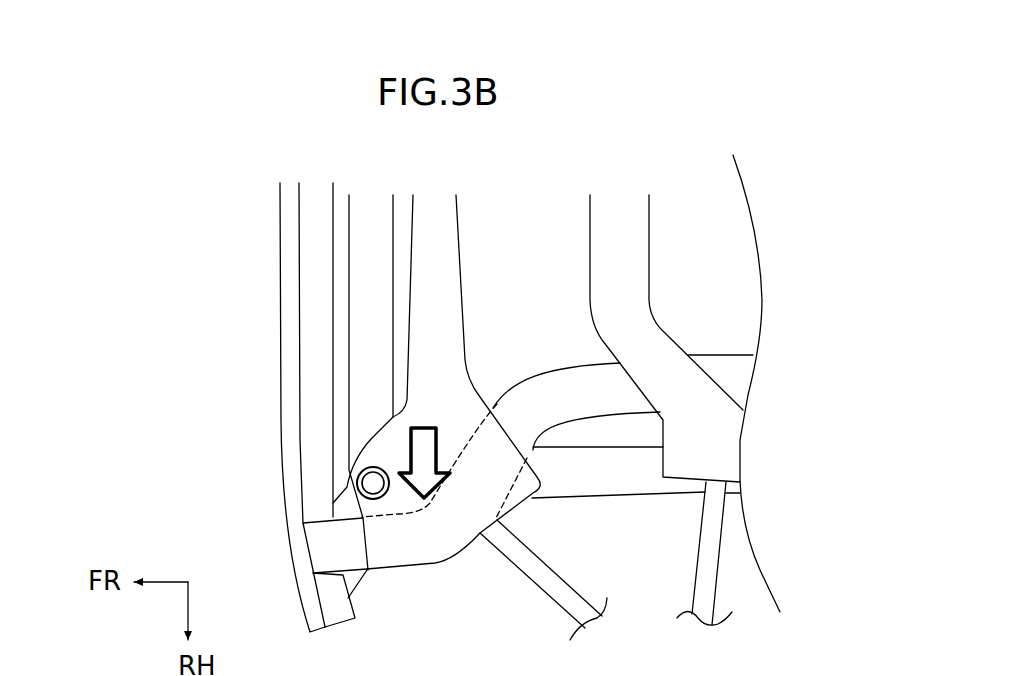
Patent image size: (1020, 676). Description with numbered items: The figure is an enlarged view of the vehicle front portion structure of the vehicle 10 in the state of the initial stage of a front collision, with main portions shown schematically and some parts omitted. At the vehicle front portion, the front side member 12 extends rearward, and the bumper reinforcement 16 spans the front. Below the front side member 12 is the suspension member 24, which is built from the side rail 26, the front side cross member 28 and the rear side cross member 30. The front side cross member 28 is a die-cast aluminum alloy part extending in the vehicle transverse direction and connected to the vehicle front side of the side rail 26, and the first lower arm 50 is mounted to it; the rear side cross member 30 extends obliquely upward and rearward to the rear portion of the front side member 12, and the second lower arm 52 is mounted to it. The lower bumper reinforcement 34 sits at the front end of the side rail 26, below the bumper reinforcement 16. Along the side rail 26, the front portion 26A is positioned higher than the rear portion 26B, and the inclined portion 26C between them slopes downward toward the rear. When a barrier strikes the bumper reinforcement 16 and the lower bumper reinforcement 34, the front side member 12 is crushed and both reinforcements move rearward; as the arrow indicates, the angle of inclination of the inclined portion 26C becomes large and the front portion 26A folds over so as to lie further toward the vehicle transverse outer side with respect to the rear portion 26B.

The vehicle 10 is at (138, 262).
The front side member 12 is at (633, 500).
The bumper reinforcement 16 is at (333, 237).
The suspension member 24 is at (482, 202).
The side rail 26 is at (535, 373).
The front portion 26A is at (352, 578).
The rear portion 26B is at (723, 355).
The inclined portion 26C is at (566, 428).
The front side cross member 28 is at (464, 288).
The rear side cross member 30 is at (656, 240).
The lower bumper reinforcement 34 is at (280, 423).
The first lower arm 50 is at (507, 563).
The second lower arm 52 is at (717, 577).